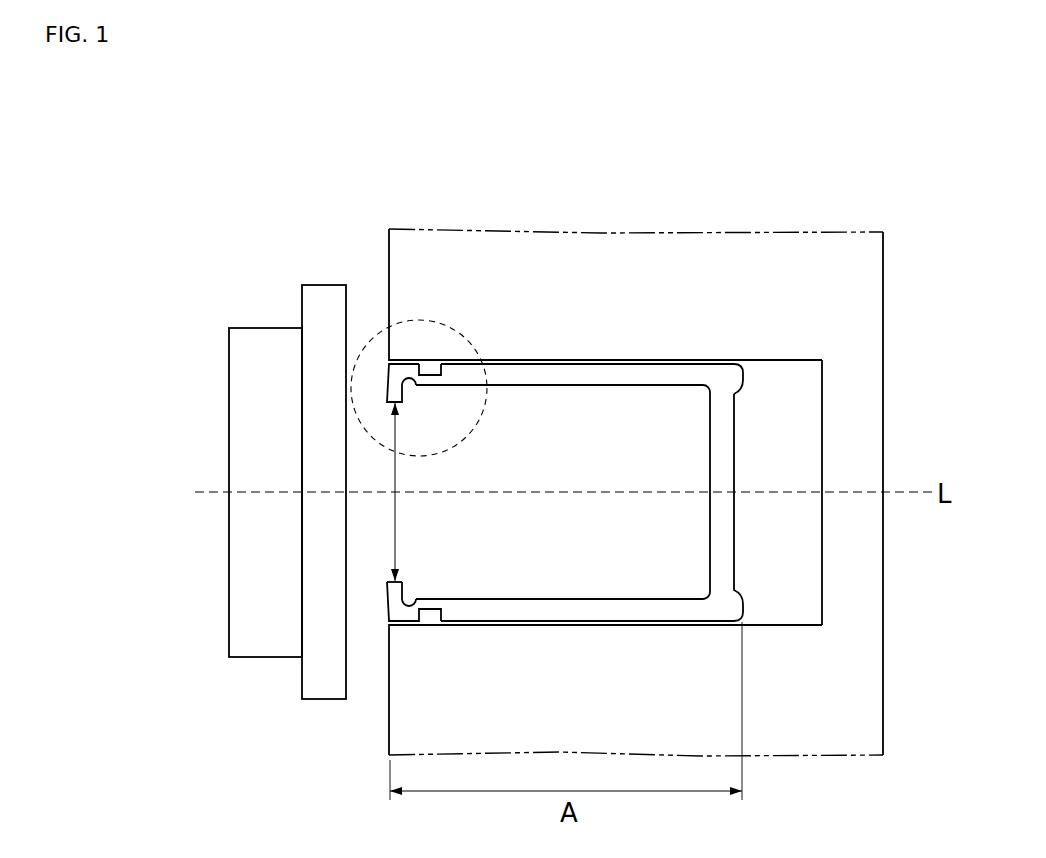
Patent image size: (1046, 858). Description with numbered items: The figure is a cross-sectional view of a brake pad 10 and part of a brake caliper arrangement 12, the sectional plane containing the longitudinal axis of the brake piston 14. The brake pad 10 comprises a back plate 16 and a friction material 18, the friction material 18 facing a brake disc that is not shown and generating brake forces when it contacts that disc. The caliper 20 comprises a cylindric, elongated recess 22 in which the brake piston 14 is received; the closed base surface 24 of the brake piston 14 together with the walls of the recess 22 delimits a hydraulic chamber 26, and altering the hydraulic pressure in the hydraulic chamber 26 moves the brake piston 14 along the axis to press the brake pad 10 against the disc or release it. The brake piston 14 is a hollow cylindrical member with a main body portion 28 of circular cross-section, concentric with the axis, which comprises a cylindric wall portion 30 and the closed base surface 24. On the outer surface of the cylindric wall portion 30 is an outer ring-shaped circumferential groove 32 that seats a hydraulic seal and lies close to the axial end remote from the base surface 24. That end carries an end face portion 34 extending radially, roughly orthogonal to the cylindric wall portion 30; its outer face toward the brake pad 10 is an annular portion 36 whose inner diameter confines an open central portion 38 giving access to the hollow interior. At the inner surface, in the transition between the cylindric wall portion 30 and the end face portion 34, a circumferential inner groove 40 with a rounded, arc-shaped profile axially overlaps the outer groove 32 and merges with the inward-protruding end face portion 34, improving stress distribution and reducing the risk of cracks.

The brake pad 10 is at (250, 456).
The brake caliper arrangement 12 is at (628, 449).
The brake piston 14 is at (620, 479).
The back plate 16 is at (323, 298).
The friction material 18 is at (238, 378).
The caliper 20 is at (670, 492).
The recess 22 is at (800, 567).
The closed base surface 24 is at (720, 443).
The hydraulic chamber 26 is at (800, 612).
The main body portion 28 is at (553, 370).
The cylindric wall portion 30 is at (693, 372).
The outer groove 32 is at (432, 370).
The end face portion 34 is at (378, 588).
The annular portion 36 is at (388, 607).
The open central portion 38 is at (412, 480).
The inner groove 40 is at (418, 590).